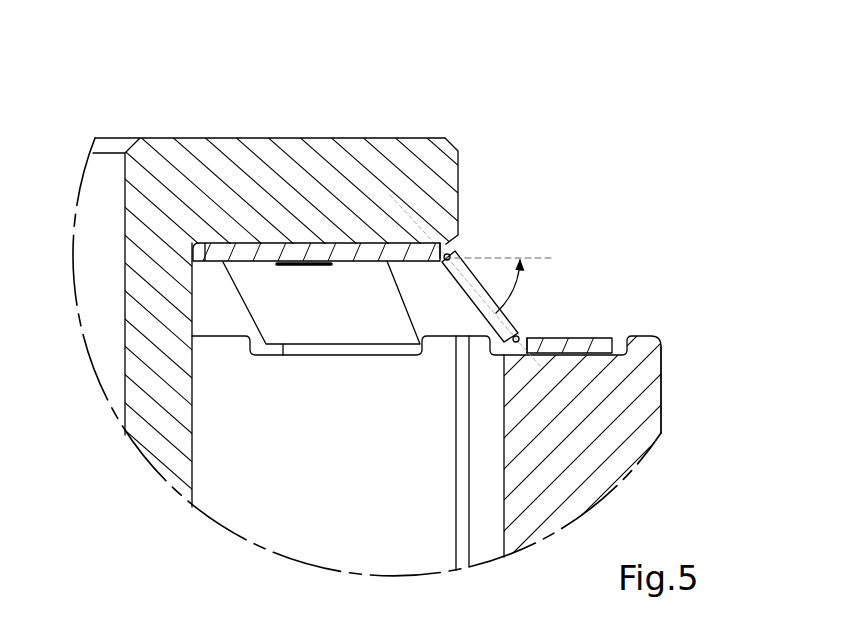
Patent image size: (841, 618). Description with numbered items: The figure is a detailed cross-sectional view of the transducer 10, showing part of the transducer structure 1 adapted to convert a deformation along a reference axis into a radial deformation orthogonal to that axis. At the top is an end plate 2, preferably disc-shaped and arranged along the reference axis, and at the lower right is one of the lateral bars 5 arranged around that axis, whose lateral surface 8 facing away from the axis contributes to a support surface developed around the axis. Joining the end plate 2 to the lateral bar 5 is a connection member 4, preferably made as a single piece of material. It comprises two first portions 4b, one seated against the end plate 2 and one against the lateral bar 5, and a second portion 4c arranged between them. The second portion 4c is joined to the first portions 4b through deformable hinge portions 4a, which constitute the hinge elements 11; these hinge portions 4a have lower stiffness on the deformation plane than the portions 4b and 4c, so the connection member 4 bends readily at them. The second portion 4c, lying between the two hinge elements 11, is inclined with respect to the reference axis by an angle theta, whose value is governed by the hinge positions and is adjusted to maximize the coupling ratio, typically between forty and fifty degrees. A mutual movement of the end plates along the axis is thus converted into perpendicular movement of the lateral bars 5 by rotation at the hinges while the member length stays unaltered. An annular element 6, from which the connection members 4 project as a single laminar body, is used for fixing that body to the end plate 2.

The transducer structure 1 is at (465, 313).
The end plate 2 is at (328, 185).
The connection member 4 is at (406, 297).
The hinge portion 4a is at (449, 254).
The first portion 4b is at (350, 264).
The second portion 4c is at (478, 290).
The lateral bar 5 is at (632, 392).
The annular element 6 is at (244, 262).
The lateral surface 8 is at (665, 421).
The transducer 10 is at (701, 164).
The hinge element 11 is at (462, 249).
The angle theta is at (518, 285).